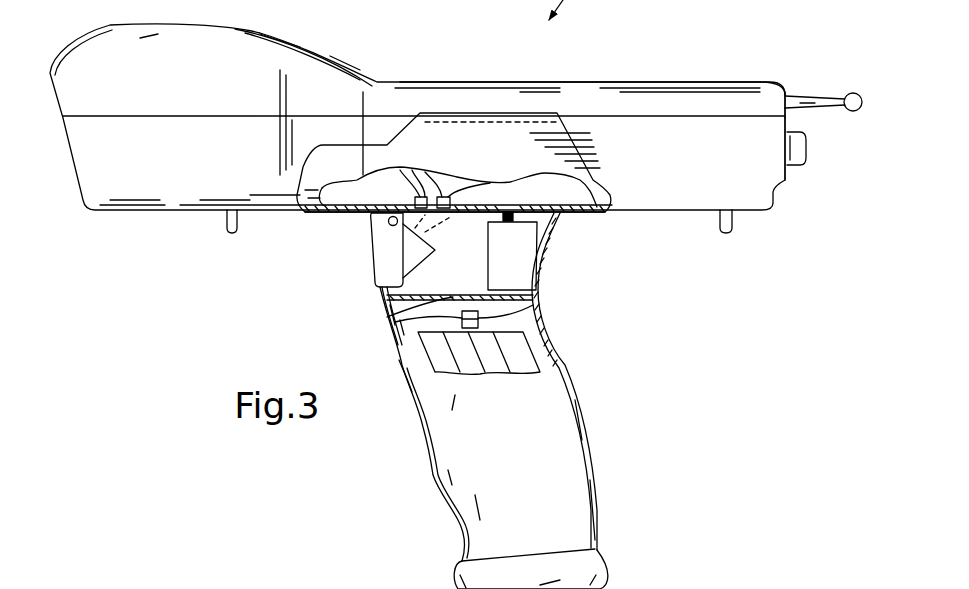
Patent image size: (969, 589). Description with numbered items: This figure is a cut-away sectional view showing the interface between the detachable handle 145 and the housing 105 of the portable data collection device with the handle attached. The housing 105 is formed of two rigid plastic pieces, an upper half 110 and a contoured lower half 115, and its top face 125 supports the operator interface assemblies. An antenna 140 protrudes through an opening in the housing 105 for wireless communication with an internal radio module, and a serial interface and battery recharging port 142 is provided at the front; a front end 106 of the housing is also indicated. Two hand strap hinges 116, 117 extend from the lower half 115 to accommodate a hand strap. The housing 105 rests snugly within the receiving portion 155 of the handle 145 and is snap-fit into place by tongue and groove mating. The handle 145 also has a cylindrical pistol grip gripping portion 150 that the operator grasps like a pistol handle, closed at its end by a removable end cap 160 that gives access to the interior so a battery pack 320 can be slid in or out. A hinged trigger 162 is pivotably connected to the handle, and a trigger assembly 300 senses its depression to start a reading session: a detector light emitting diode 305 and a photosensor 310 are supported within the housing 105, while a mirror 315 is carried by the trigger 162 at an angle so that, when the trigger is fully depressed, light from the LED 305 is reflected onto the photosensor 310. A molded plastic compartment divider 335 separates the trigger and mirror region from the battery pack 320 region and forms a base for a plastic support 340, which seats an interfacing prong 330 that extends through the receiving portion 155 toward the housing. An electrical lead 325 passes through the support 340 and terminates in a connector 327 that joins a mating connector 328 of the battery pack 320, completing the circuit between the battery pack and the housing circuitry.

The housing 105 is at (56, 137).
The front end 106 is at (787, 85).
The upper half 110 is at (762, 80).
The lower half 115 is at (787, 178).
The hand strap hinge 116 is at (230, 232).
The hand strap hinge 117 is at (724, 233).
The top face 125 is at (640, 62).
The antenna 140 is at (830, 95).
The serial interface and battery recharging port 142 is at (808, 143).
The detachable handle 145 is at (511, 401).
The pistol grip gripping portion 150 is at (543, 426).
The receiving portion 155 is at (598, 150).
The removable end cap 160 is at (612, 571).
The hinged trigger 162 is at (370, 250).
The trigger assembly 300 is at (348, 233).
The detector light emitting diode 305 is at (400, 197).
The photosensor 310 is at (462, 193).
The mirror 315 is at (428, 240).
The battery pack 320 is at (403, 368).
The electrical lead 325 is at (540, 327).
The connector 327 is at (395, 322).
The mating connector 328 is at (408, 352).
The interfacing prong 330 is at (513, 211).
The compartment divider 335 is at (392, 316).
The plastic support 340 is at (505, 255).